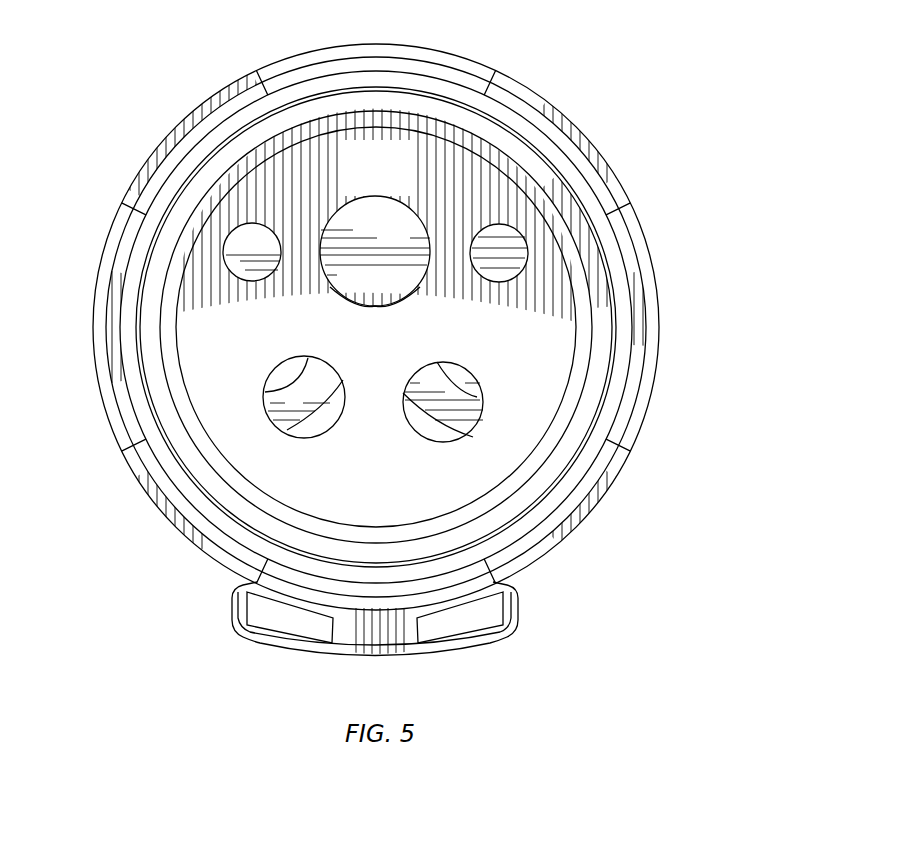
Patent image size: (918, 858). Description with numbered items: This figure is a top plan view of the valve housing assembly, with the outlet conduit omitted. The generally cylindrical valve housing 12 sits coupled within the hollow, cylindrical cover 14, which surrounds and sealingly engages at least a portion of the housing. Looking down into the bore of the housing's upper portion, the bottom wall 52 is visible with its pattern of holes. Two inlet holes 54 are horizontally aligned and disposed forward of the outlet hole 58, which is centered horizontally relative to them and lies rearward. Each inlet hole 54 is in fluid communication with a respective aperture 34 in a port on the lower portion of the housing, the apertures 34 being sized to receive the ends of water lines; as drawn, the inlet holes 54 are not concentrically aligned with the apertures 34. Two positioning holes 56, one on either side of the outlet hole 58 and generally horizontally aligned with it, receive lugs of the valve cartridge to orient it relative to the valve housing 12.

The valve housing 12 is at (545, 175).
The cover 14 is at (548, 105).
The aperture 34 is at (287, 370).
The bottom wall 52 is at (297, 485).
The inlet hole 54 is at (312, 427).
The positioning hole 56 is at (253, 243).
The outlet hole 58 is at (398, 217).